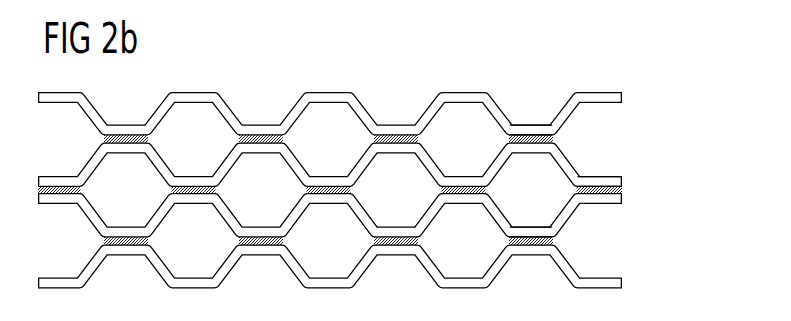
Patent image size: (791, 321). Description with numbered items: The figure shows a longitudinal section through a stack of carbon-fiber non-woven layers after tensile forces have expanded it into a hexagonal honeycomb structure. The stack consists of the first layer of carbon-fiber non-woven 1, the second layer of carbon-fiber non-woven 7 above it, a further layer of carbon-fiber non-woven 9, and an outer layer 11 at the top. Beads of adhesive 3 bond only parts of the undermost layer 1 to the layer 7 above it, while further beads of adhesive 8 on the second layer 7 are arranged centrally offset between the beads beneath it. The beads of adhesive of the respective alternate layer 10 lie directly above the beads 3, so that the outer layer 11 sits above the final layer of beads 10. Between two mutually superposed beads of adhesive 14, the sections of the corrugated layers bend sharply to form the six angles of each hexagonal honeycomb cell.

The first layer of carbon-fiber non-woven 1 is at (624, 283).
The beads of adhesive 3 is at (532, 238).
The second layer of carbon-fiber non-woven 7 is at (622, 198).
The further beads of adhesive 8 is at (597, 185).
The further layer of carbon-fiber non-woven 9 is at (622, 182).
The beads of adhesive of the respective alternate layer 10 is at (532, 134).
The outer layer 11 is at (624, 98).
The beads of adhesive arranged so as to be mutually superposed 14 is at (392, 134).